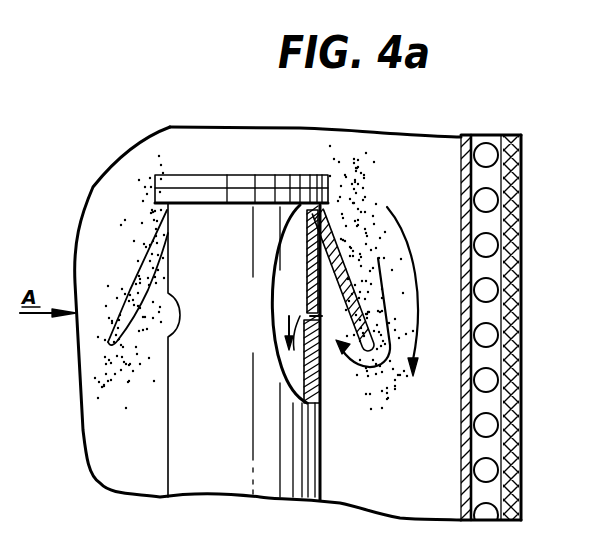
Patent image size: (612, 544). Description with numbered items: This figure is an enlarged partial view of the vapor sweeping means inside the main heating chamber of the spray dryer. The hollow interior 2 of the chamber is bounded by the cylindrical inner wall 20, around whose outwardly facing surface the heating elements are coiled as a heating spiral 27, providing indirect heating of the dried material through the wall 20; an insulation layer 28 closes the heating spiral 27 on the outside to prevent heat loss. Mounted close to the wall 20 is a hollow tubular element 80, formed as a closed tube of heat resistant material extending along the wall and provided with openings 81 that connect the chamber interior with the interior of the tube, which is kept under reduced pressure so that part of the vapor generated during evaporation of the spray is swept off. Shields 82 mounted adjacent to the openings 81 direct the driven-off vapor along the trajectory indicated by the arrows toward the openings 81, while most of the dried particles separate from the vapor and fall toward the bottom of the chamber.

The hollow interior 2 is at (413, 157).
The inner wall 20 is at (461, 468).
The heating spiral 27 is at (491, 344).
The insulation layer 28 is at (522, 304).
The hollow tubular element 80 is at (221, 450).
The openings 81 is at (312, 316).
The shields 82 is at (150, 289).